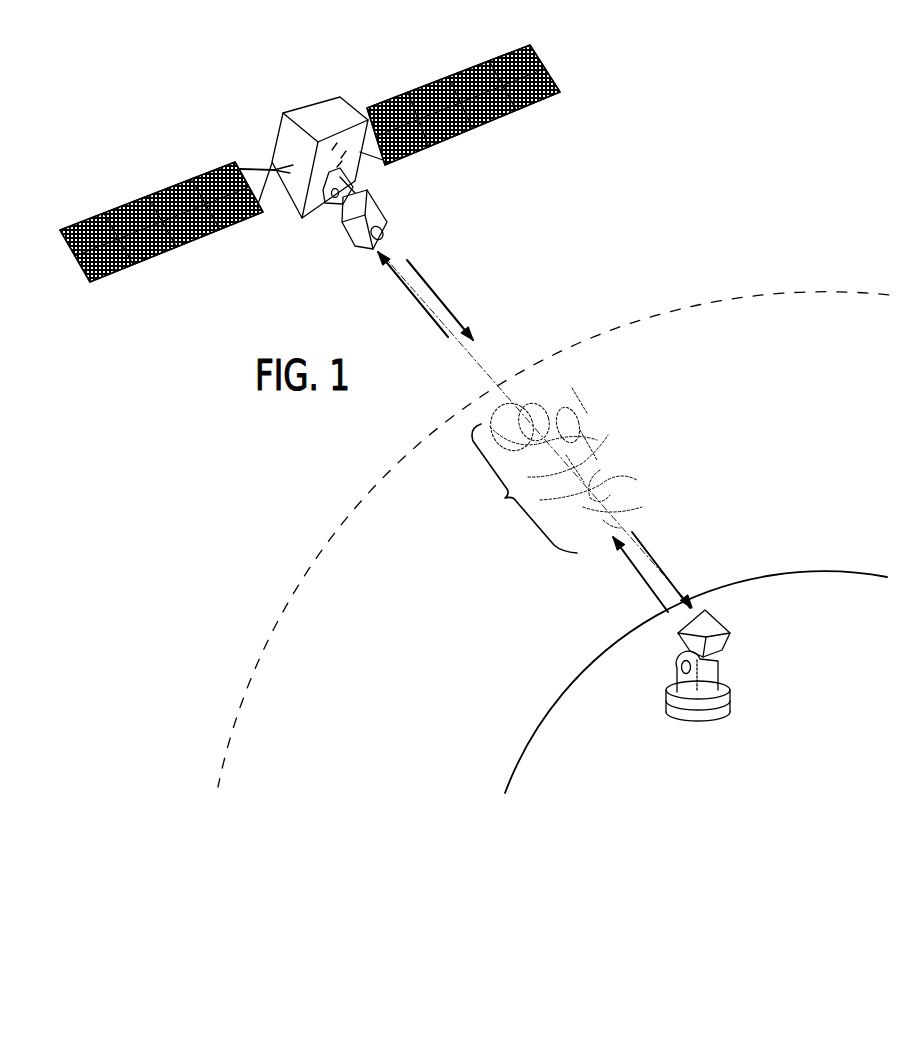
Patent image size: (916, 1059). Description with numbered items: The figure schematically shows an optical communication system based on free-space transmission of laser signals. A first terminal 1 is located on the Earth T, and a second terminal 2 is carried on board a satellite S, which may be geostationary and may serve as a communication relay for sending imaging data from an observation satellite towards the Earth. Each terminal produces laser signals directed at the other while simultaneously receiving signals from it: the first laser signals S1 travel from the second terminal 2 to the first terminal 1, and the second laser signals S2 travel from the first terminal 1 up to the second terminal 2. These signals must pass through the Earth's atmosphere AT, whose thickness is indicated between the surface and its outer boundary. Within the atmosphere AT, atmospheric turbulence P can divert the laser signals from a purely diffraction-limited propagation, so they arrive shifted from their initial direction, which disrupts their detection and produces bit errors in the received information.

The satellite S is at (295, 201).
The second terminal 2 is at (353, 230).
The first laser signals S1 is at (421, 273).
The second laser signals S2 is at (433, 320).
The atmospheric turbulence P is at (557, 470).
The Earth T is at (838, 570).
The first terminal 1 is at (712, 625).
The Earth's atmosphere AT is at (288, 605).